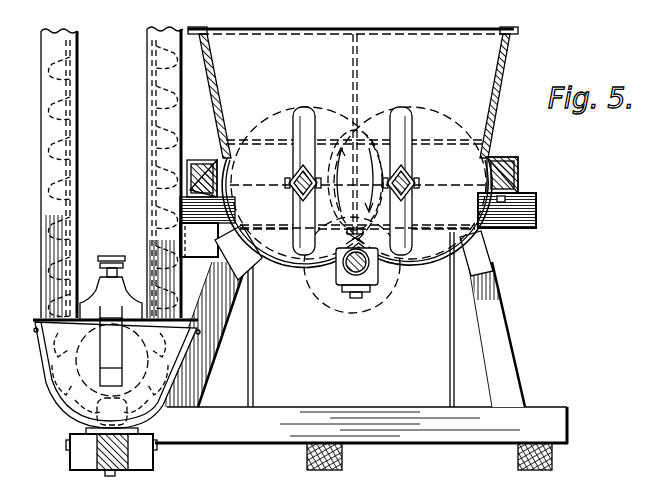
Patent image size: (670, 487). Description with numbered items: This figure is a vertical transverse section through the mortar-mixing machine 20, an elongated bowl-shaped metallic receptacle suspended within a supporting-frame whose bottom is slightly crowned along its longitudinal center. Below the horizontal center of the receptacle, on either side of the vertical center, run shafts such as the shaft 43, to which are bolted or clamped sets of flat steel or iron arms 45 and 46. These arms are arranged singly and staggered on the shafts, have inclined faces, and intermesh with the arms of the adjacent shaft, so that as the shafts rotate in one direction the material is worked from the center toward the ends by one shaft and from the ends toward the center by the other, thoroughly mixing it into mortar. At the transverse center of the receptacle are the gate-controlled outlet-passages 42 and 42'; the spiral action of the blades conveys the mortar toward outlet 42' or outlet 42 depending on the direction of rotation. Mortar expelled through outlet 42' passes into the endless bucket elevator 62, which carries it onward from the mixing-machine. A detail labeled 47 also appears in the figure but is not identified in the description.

The mortar-mixing machine 20 is at (353, 170).
The gate-controlled outlet-passage 42 is at (348, 221).
The gate-controlled outlet-passage 42' is at (362, 222).
The shaft 43 is at (411, 178).
The flat steel or iron arms 45 is at (293, 117).
The flat steel or iron arms 46 is at (410, 122).
The bearing hub 47 is at (296, 177).
The endless bucket elevator 62 is at (116, 251).